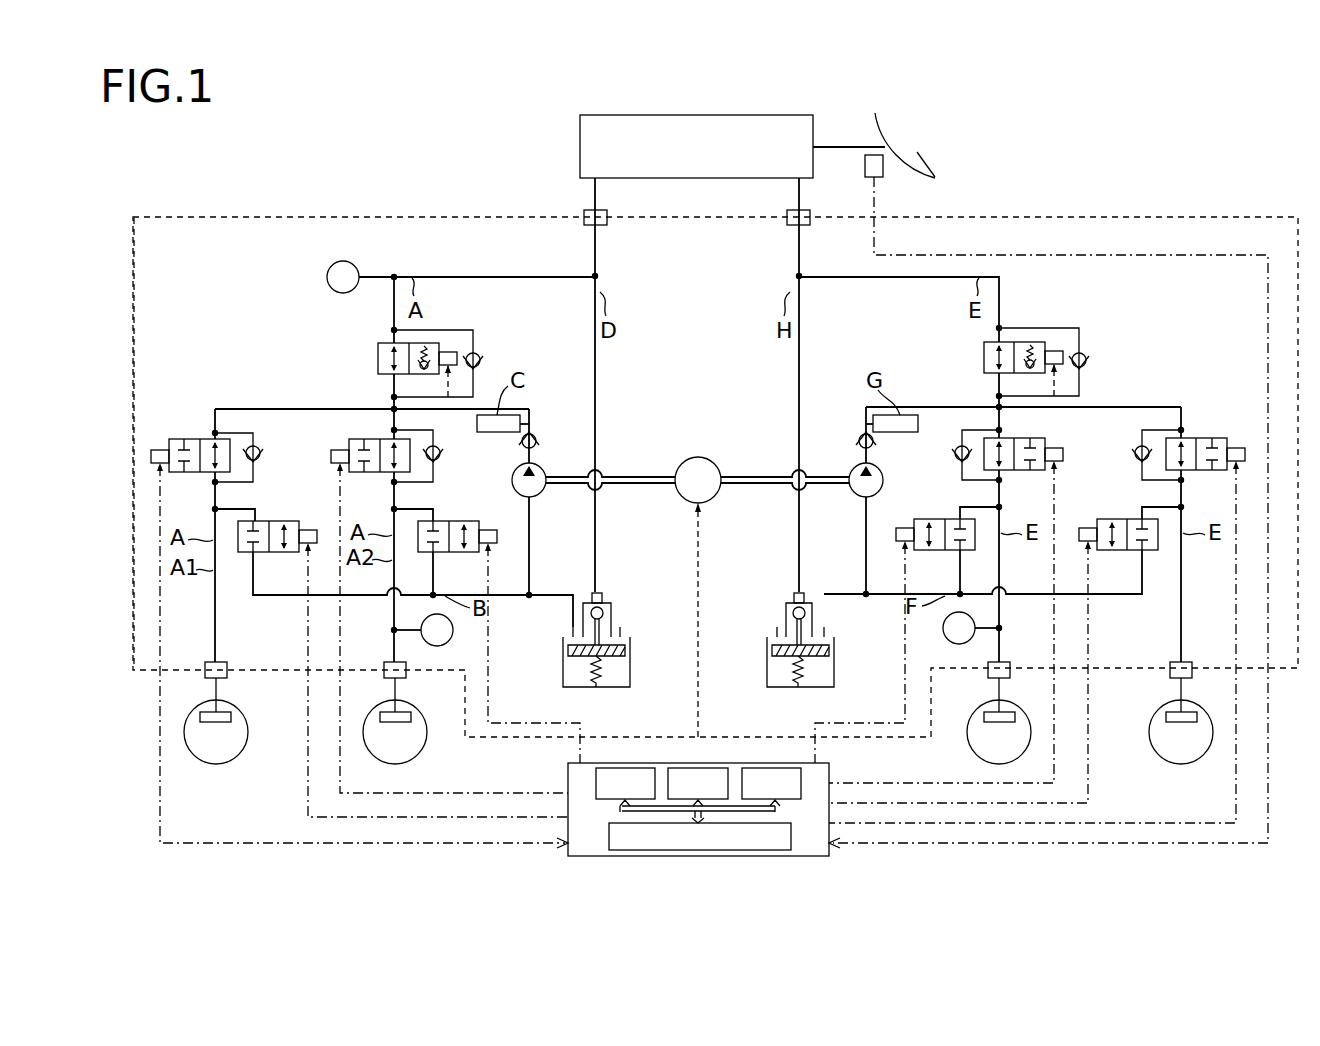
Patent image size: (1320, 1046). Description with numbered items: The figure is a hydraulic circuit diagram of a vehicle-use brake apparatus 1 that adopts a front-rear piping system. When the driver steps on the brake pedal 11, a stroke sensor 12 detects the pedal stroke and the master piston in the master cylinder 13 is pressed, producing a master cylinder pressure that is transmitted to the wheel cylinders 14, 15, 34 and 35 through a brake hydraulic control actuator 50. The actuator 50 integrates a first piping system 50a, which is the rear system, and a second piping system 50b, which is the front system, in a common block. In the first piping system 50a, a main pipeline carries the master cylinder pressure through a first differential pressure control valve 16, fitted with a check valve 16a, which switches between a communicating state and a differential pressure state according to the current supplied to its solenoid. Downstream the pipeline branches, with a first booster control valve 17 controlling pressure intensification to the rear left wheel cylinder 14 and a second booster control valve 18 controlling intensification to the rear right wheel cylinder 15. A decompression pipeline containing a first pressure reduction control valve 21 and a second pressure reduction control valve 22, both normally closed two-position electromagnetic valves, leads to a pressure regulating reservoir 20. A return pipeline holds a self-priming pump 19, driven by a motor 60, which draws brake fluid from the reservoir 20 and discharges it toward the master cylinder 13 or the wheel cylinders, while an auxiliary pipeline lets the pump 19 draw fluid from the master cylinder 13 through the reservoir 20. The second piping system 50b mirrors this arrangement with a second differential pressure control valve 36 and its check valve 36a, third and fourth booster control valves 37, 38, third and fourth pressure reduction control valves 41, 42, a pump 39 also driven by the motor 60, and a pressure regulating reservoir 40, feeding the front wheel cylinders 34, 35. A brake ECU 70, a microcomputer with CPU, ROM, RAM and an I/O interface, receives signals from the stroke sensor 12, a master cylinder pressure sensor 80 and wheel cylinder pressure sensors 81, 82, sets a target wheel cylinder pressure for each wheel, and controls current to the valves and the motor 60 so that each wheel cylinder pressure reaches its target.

The vehicle-use brake apparatus 1 is at (1048, 120).
The brake pedal 11 is at (880, 120).
The stroke sensor 12 is at (865, 165).
The master cylinder 13 is at (580, 150).
The wheel cylinder 14 is at (200, 716).
The wheel cylinder 15 is at (380, 716).
The first differential pressure control valve 16 is at (378, 358).
The check valve 16a is at (478, 353).
The first booster control valve 17 is at (213, 433).
The second booster control valve 18 is at (392, 430).
The self-priming pump 19 is at (512, 481).
The pressure regulating reservoir 20 is at (562, 676).
The first pressure reduction control valve 21 is at (258, 521).
The second pressure reduction control valve 22 is at (440, 521).
The wheel cylinder 34 is at (1197, 717).
The wheel cylinder 35 is at (1015, 717).
The second differential pressure control valve 36 is at (984, 357).
The check valve 36a is at (1085, 353).
The third booster control valve 37 is at (1190, 436).
The fourth booster control valve 38 is at (1008, 438).
The pump 39 is at (883, 480).
The pressure regulating reservoir 40 is at (836, 677).
The third pressure reduction control valve 41 is at (1140, 519).
The fourth pressure reduction control valve 42 is at (958, 519).
The brake hydraulic control actuator 50 is at (1287, 212).
The first piping system 50a is at (200, 265).
The second piping system 50b is at (1228, 238).
The motor 60 is at (688, 457).
The brake ECU 70 is at (829, 770).
The M/C pressure sensor 80 is at (327, 277).
The W/C pressure sensor 81 is at (453, 633).
The W/C pressure sensor 82 is at (943, 632).